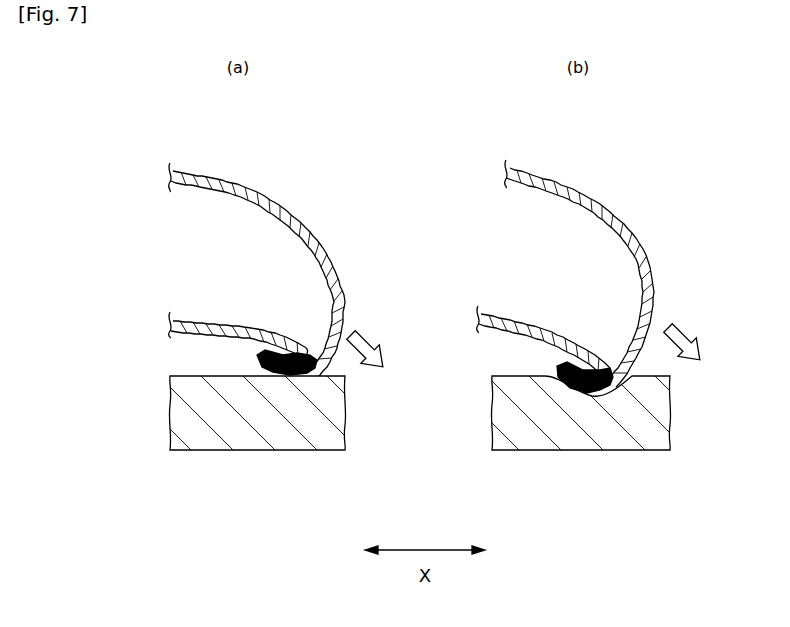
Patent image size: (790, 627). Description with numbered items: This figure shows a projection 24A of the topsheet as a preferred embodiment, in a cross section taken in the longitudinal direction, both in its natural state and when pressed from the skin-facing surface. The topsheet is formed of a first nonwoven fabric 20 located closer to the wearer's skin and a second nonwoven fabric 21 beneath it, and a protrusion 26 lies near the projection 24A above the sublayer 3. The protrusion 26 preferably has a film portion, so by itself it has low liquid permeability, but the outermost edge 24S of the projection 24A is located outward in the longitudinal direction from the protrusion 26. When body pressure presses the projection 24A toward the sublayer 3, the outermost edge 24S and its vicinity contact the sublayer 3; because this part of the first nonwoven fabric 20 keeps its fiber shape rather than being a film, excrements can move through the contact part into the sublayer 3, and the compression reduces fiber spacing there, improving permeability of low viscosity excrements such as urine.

The sublayer 3 is at (192, 411).
The first nonwoven fabric 20 is at (298, 208).
The second nonwoven fabric 21 is at (217, 320).
The projection 24A is at (226, 184).
The outermost edge 24S is at (345, 298).
The protrusion 26 is at (293, 377).